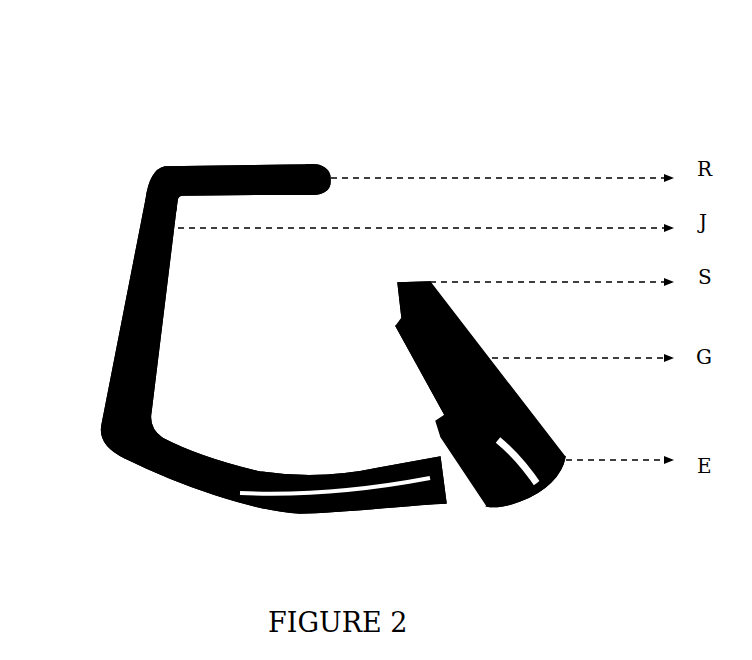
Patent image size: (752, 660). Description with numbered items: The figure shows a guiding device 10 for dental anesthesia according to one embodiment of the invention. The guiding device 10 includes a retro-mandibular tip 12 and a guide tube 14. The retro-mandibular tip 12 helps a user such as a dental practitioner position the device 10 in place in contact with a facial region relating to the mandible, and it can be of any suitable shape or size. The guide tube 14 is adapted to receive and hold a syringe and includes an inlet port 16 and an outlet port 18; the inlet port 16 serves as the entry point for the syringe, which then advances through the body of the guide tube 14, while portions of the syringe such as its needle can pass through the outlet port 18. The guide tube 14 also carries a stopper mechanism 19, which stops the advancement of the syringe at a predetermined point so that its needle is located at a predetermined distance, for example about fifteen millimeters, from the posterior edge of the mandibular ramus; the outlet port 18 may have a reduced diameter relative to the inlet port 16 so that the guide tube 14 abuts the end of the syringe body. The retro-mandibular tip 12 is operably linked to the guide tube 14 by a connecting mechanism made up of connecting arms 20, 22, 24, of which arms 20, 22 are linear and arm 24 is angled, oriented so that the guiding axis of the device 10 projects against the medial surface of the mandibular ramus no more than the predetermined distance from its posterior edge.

The guiding device 10 is at (336, 324).
The retro-mandibular tip 12 is at (314, 167).
The guide tube 14 is at (490, 510).
The inlet port 16 is at (540, 485).
The outlet port 18 is at (398, 285).
The stopper mechanism 19 is at (398, 332).
The connecting arm 20 is at (212, 167).
The connecting arm 22 is at (127, 297).
The connecting arm 24 is at (247, 508).